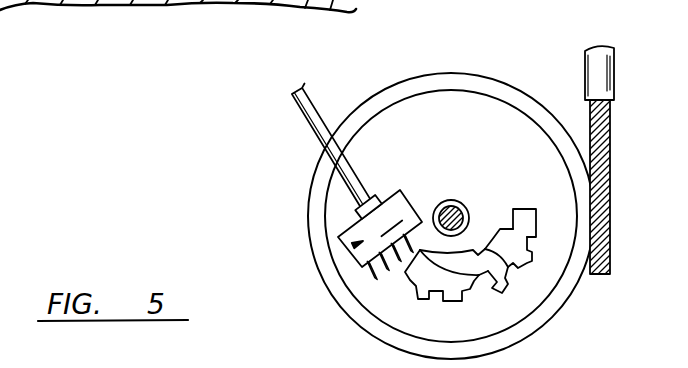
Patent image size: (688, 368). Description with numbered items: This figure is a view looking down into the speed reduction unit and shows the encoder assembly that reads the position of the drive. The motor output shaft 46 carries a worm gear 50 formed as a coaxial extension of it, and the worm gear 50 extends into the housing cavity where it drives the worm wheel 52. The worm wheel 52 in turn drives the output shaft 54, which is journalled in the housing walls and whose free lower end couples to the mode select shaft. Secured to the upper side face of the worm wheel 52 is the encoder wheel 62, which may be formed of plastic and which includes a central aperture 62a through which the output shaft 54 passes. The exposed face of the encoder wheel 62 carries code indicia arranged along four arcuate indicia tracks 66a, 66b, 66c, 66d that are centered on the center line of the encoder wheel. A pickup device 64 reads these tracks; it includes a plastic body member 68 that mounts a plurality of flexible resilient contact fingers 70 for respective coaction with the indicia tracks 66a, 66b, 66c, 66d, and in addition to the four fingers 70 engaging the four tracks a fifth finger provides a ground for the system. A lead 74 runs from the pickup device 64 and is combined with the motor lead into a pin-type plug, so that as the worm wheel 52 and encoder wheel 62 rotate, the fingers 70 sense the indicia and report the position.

The motor output shaft 46 is at (592, 67).
The worm gear 50 is at (614, 190).
The worm wheel 52 is at (487, 77).
The output shaft 54 is at (441, 209).
The encoder wheel 62 is at (423, 118).
The central aperture 62a is at (450, 200).
The pickup device 64 is at (353, 245).
The arcuate indicia track 66a is at (529, 208).
The arcuate indicia track 66b is at (516, 208).
The arcuate indicia track 66c is at (507, 228).
The arcuate indicia track 66d is at (515, 272).
The plastic body member 68 is at (380, 228).
The flexible resilient contact fingers 70 is at (375, 278).
The lead 74 is at (322, 118).